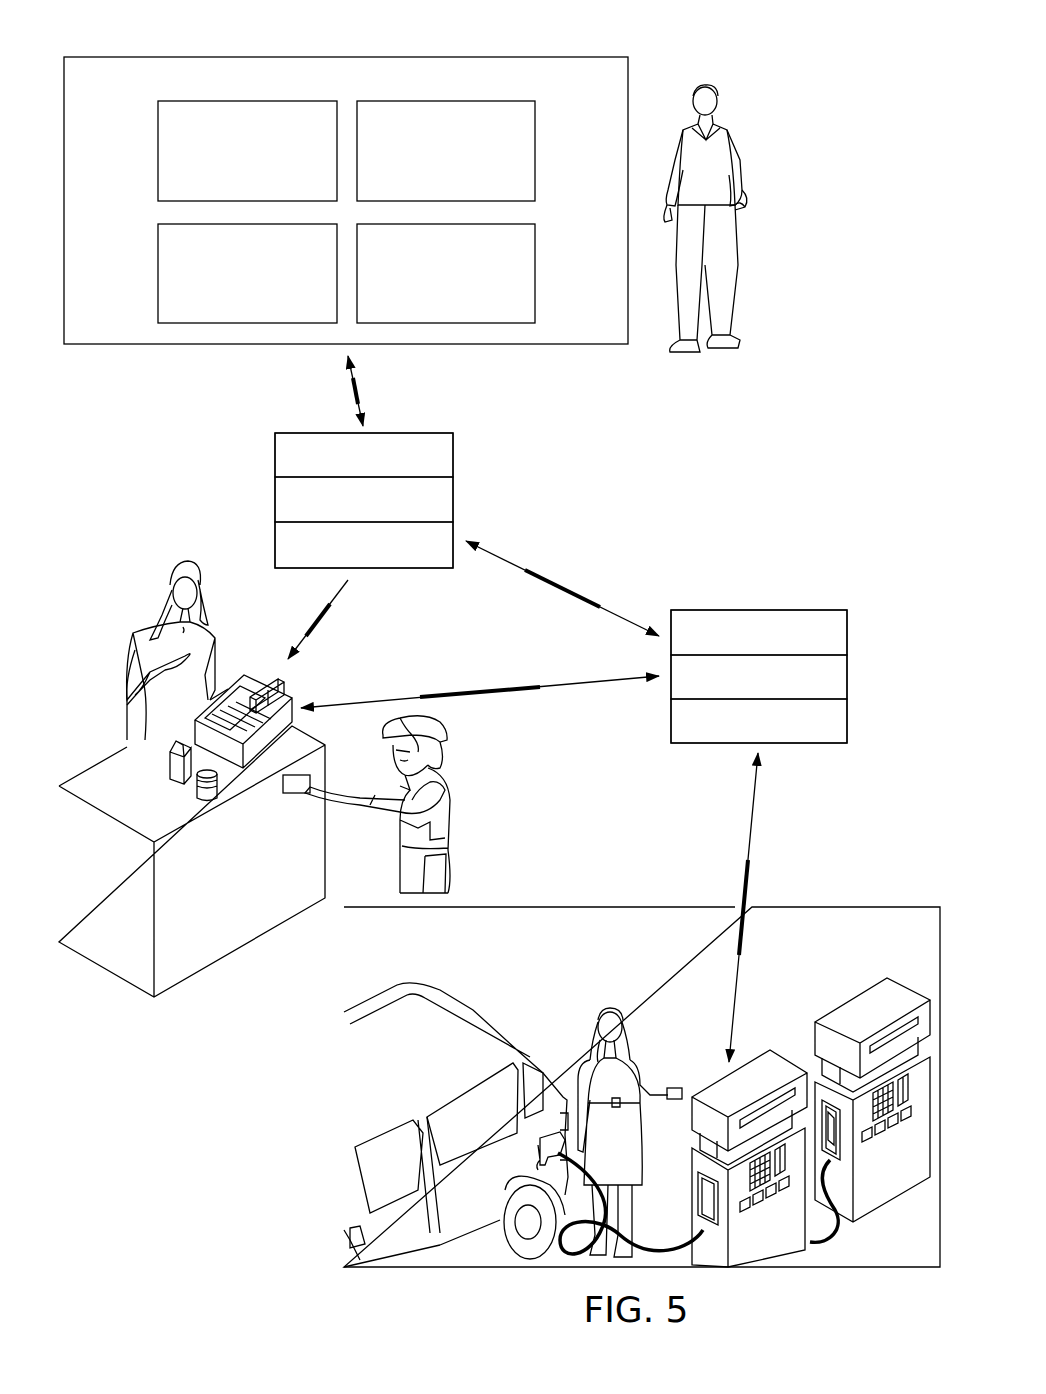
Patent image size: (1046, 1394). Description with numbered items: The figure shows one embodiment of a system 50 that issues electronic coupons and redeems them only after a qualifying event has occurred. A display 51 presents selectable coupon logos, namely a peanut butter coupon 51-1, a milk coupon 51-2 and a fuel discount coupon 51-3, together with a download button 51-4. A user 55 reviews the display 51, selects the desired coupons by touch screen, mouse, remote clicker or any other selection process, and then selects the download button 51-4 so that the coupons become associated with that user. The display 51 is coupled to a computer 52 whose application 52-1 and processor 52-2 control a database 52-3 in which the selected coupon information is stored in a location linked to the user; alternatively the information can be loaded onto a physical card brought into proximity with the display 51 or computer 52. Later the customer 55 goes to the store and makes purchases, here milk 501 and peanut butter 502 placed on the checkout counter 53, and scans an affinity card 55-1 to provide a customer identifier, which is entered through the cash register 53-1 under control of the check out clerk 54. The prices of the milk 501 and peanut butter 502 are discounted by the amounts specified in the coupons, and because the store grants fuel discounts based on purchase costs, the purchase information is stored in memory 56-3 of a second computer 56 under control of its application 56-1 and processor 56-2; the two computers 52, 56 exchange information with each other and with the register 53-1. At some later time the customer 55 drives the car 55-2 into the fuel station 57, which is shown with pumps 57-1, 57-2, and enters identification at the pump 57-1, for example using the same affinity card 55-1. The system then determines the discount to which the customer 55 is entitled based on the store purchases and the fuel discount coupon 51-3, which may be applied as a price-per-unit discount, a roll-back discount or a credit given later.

The system 50 is at (850, 104).
The display 51 is at (176, 51).
The peanut butter coupon 51-1 is at (158, 149).
The milk coupon 51-2 is at (535, 149).
The fuel discount coupon 51-3 is at (158, 272).
The download button 51-4 is at (535, 272).
The computer 52 is at (302, 428).
The application 52-1 is at (275, 456).
The processor 52-2 is at (275, 500).
The database 52-3 is at (275, 543).
The checkout counter 53 is at (106, 970).
The cash register 53-1 is at (287, 690).
The check out clerk 54 is at (128, 658).
The user 55 is at (706, 87).
The affinity card 55-1 is at (290, 795).
The car 55-2 is at (448, 990).
The computer 56 is at (790, 603).
The application 56-1 is at (840, 631).
The processor 56-2 is at (840, 675).
The memory 56-3 is at (840, 719).
The fuel station 57 is at (335, 1113).
The pump 57-1 is at (762, 1060).
The fuel pump 57-2 is at (885, 992).
The milk 501 is at (169, 766).
The peanut butter 502 is at (197, 790).